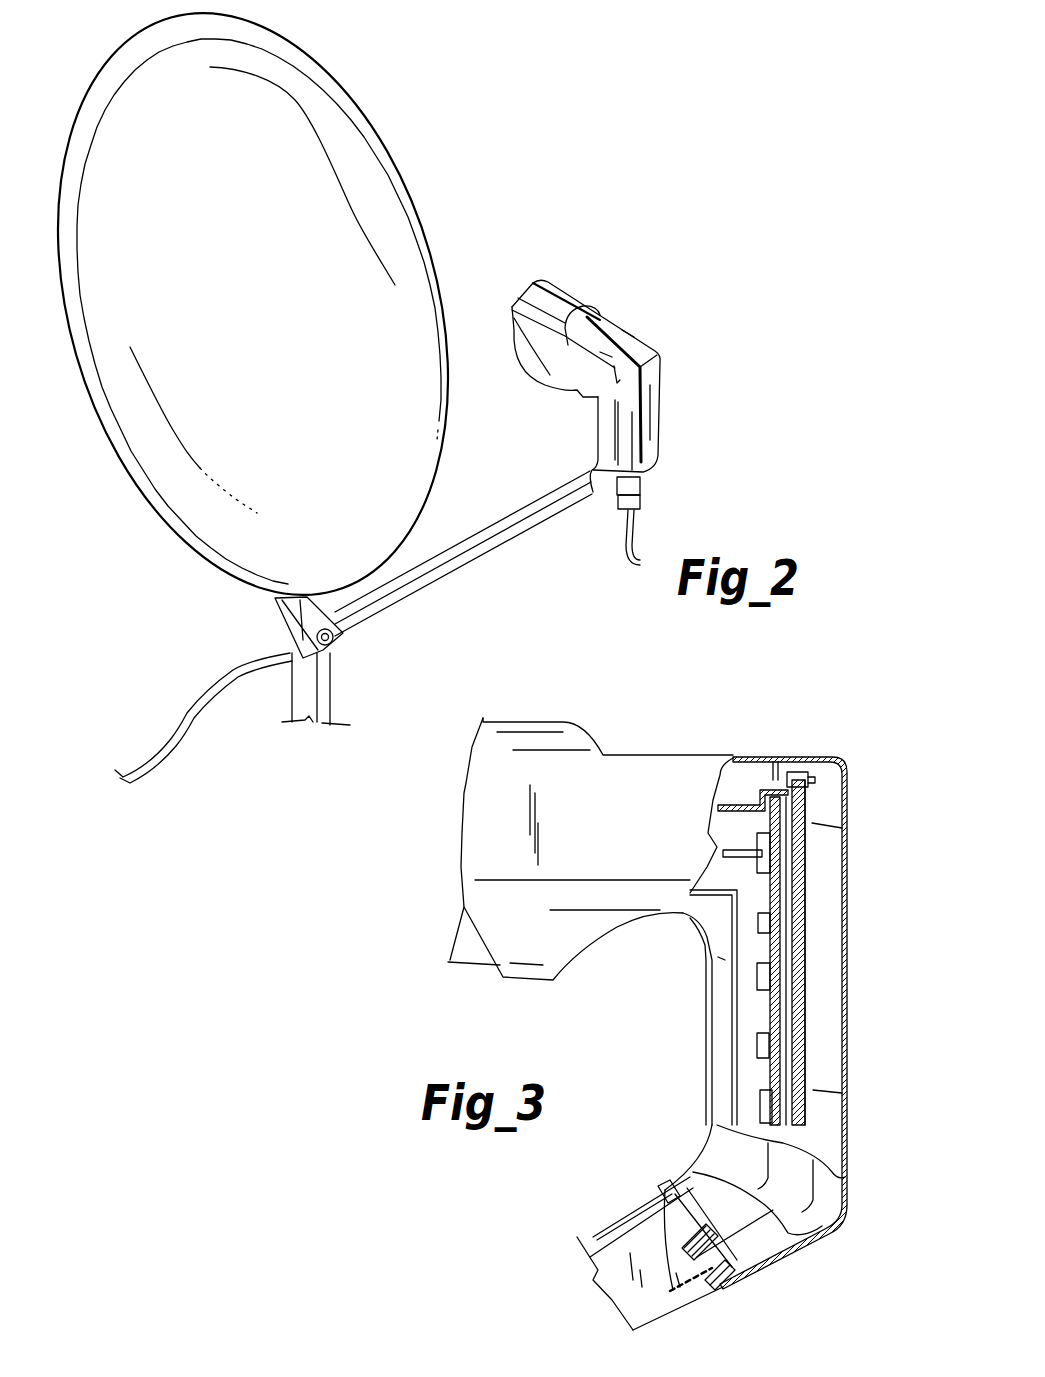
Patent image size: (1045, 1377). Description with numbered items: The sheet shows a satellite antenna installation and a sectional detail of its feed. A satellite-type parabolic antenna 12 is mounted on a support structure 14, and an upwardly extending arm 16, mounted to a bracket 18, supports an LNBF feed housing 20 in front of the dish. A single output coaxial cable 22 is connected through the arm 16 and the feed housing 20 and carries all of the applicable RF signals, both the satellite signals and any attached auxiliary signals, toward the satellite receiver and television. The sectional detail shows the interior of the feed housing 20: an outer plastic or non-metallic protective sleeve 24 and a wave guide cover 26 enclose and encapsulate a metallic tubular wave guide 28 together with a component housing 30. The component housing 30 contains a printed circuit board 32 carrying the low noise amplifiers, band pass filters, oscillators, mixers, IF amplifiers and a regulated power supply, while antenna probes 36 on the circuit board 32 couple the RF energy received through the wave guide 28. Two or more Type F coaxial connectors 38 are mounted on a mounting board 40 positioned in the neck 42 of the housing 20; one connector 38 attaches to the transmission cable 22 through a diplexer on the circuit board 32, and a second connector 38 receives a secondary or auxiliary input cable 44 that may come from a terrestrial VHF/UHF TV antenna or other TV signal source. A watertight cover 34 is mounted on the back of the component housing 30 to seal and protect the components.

In FIG. 2, the parabolic antenna 12 is at (445, 143).
In FIG. 2, the support structure 14 is at (323, 692).
In FIG. 2, the arm 16 is at (492, 540).
In FIG. 3, the arm 16 is at (610, 1233).
In FIG. 2, the bracket 18 is at (303, 613).
In FIG. 2, the LNBF feed housing 20 is at (615, 414).
In FIG. 3, the LNBF feed housing 20 is at (659, 991).
In FIG. 2, the output coaxial cable 22 is at (180, 713).
In FIG. 3, the output coaxial cable 22 is at (677, 1273).
In FIG. 2, the protective sleeve 24 is at (597, 318).
In FIG. 3, the protective sleeve 24 is at (697, 768).
In FIG. 2, the wave guide cover 26 is at (528, 358).
In FIG. 3, the wave guide cover 26 is at (470, 952).
In FIG. 3, the wave guide 28 is at (707, 920).
In FIG. 3, the component housing 30 is at (735, 1010).
In FIG. 3, the printed circuit board 32 is at (780, 897).
In FIG. 3, the watertight cover 34 is at (805, 975).
In FIG. 3, the antenna probes 36 is at (730, 850).
In FIG. 2, the Type F coaxial connectors 38 is at (633, 489).
In FIG. 3, the Type F coaxial connectors 38 is at (727, 1280).
In FIG. 3, the mounting board 40 is at (747, 1247).
In FIG. 3, the neck 42 is at (672, 1187).
In FIG. 2, the auxiliary input cable 44 is at (637, 533).